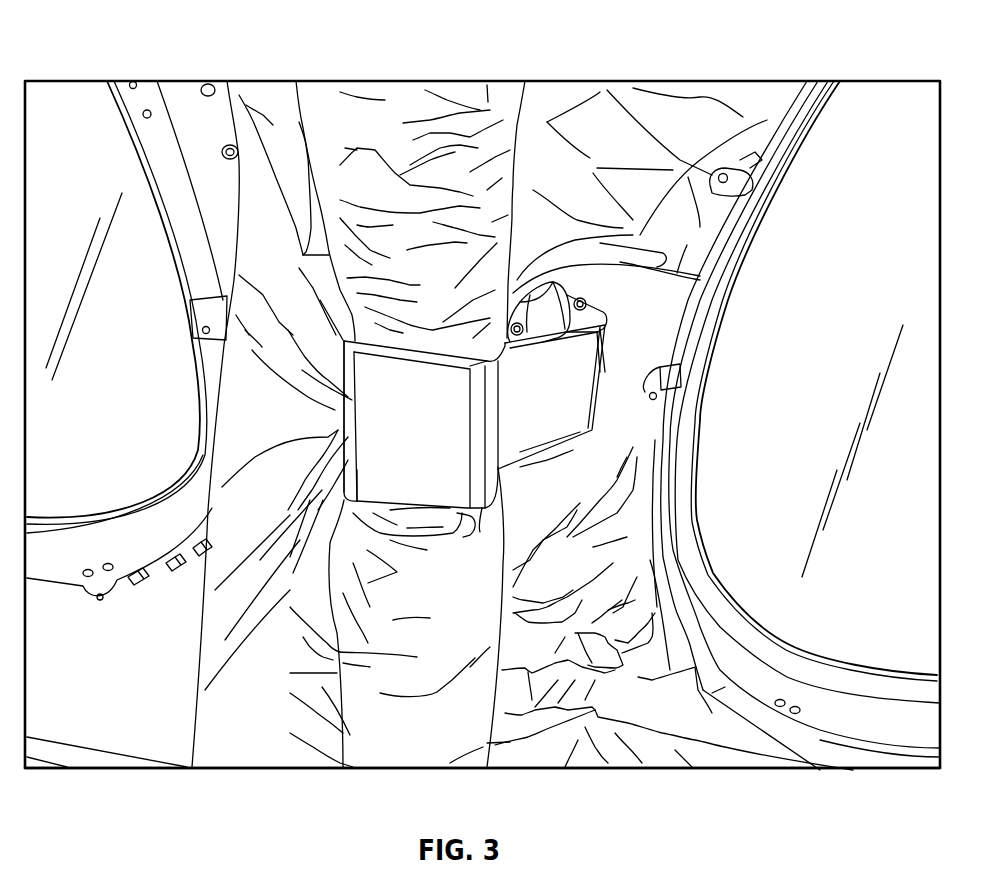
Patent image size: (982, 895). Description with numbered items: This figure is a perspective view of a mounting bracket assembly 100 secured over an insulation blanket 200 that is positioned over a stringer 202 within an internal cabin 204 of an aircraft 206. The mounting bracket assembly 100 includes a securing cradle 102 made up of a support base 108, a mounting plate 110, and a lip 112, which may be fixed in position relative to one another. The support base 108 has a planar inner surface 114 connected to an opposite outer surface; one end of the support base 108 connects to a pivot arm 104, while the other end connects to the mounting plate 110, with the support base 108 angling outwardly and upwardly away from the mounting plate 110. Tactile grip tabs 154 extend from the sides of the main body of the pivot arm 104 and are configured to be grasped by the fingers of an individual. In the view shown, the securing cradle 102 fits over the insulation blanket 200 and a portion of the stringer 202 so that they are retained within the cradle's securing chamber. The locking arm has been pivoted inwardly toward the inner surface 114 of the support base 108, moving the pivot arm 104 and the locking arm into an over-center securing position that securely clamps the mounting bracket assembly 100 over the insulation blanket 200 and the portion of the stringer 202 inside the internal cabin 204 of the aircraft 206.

The mounting bracket assembly 100 is at (305, 417).
The securing cradle 102 is at (642, 401).
The pivot arm 104 is at (664, 322).
The support base 108 is at (547, 427).
The mounting plate 110 is at (380, 455).
The lip 112 is at (346, 374).
The inner surface 114 is at (602, 325).
The tactile grip tabs 154 is at (592, 302).
The insulation blanket 200 is at (488, 100).
The stringer 202 is at (500, 124).
The internal cabin 204 is at (853, 124).
The aircraft 206 is at (582, 770).